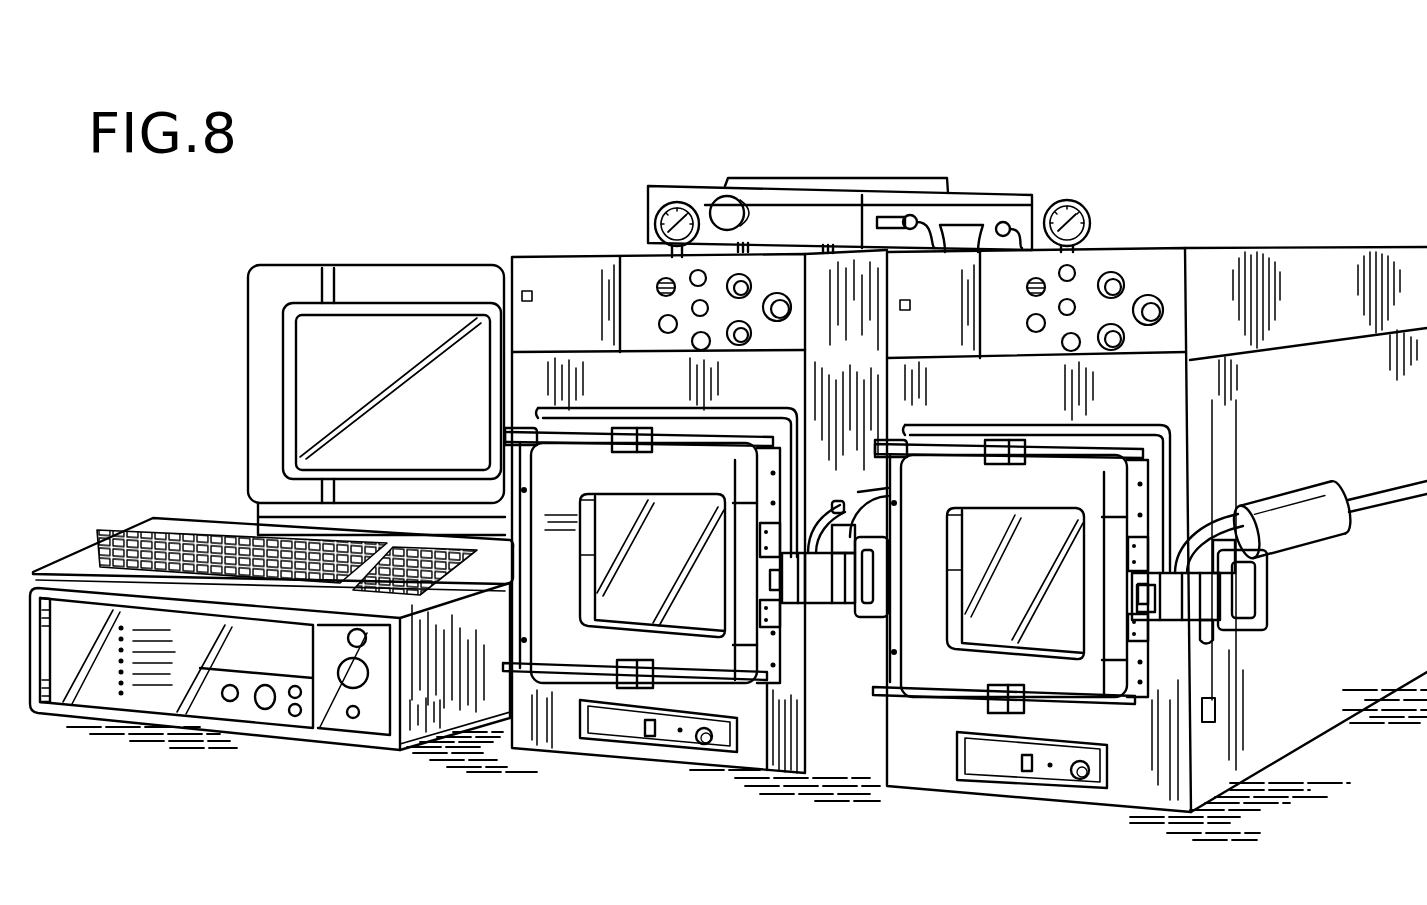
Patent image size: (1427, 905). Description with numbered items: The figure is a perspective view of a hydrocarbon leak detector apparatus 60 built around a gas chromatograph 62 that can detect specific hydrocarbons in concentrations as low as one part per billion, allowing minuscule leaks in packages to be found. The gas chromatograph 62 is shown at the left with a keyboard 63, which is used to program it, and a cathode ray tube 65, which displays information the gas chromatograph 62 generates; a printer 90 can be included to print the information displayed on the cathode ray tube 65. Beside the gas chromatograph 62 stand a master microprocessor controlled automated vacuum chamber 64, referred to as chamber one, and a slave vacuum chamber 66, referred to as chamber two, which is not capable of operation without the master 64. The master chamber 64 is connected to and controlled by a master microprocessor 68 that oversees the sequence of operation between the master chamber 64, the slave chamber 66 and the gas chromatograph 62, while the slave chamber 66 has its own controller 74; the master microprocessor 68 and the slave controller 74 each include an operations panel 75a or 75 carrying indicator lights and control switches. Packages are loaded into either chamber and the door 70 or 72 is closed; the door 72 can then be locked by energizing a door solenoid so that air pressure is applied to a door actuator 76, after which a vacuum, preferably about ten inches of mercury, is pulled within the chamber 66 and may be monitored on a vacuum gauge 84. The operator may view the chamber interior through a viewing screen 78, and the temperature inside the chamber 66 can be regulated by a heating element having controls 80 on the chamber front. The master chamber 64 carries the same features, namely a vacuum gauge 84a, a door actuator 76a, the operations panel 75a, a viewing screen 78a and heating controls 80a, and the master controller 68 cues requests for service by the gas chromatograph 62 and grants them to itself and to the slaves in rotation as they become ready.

The leak detector apparatus 60 is at (1018, 68).
The gas chromatograph 62 is at (102, 675).
The keyboard 63 is at (129, 565).
The master vacuum chamber 64 is at (748, 750).
The cathode ray tube 65 is at (318, 363).
The slave vacuum chamber 66 is at (1160, 782).
The master microprocessor 68 is at (548, 282).
The door 70 is at (578, 647).
The door 72 is at (920, 670).
The controller 74 is at (1168, 268).
The operations panel 75 is at (1087, 282).
The operations panel 75a is at (775, 272).
The door actuator 76 is at (1273, 608).
The door actuator 76a is at (868, 625).
The viewing screen 78 is at (997, 617).
The viewing screen 78a is at (627, 600).
The heating controls 80 is at (1047, 770).
The heating controls 80a is at (668, 738).
The vacuum gauge 84 is at (1065, 202).
The vacuum gauge 84a is at (677, 204).
The printer 90 is at (650, 198).